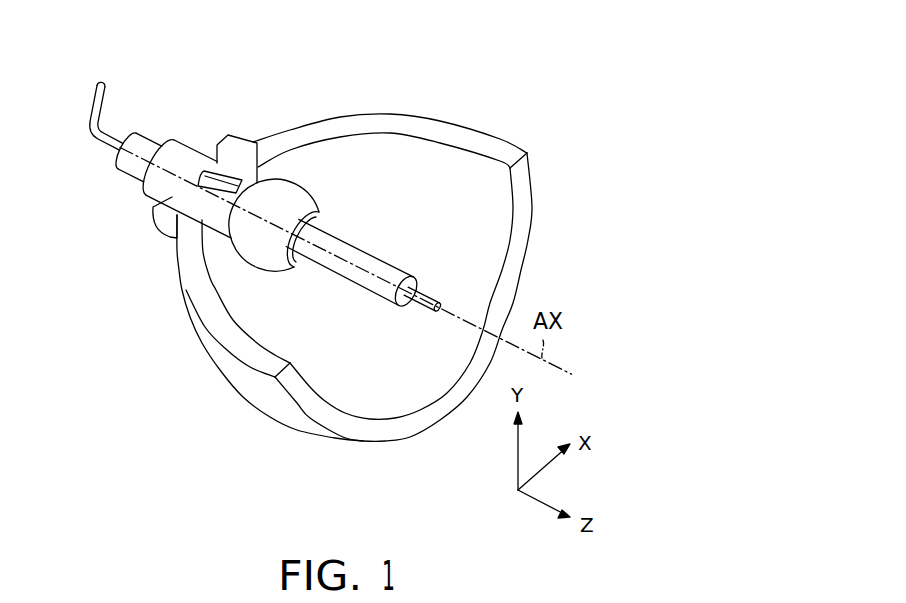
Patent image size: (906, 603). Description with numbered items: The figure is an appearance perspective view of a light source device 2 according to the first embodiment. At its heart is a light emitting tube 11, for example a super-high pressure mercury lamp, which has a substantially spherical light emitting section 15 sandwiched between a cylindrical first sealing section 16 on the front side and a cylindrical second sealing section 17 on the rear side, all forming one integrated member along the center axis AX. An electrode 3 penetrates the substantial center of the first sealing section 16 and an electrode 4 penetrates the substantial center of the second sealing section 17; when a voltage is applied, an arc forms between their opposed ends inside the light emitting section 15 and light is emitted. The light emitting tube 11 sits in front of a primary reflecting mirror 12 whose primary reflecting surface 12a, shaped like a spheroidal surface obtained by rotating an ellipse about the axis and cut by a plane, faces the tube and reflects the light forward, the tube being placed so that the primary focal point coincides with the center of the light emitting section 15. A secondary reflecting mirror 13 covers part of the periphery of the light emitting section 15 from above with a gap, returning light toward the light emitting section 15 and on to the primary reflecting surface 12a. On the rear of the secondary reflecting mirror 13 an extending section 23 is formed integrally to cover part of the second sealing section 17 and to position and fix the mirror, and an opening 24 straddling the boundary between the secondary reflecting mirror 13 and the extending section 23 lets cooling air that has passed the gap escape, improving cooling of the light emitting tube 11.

The light source device 2 is at (485, 59).
The electrode 3 is at (433, 296).
The electrode 4 is at (97, 100).
The light emitting tube 11 is at (305, 330).
The primary reflecting mirror 12 is at (530, 210).
The primary reflecting surface 12a is at (493, 218).
The secondary reflecting mirror 13 is at (287, 190).
The light emitting section 15 is at (268, 259).
The first sealing section 16 is at (347, 272).
The second sealing section 17 is at (132, 167).
The extending section 23 is at (187, 153).
The opening 24 is at (230, 167).